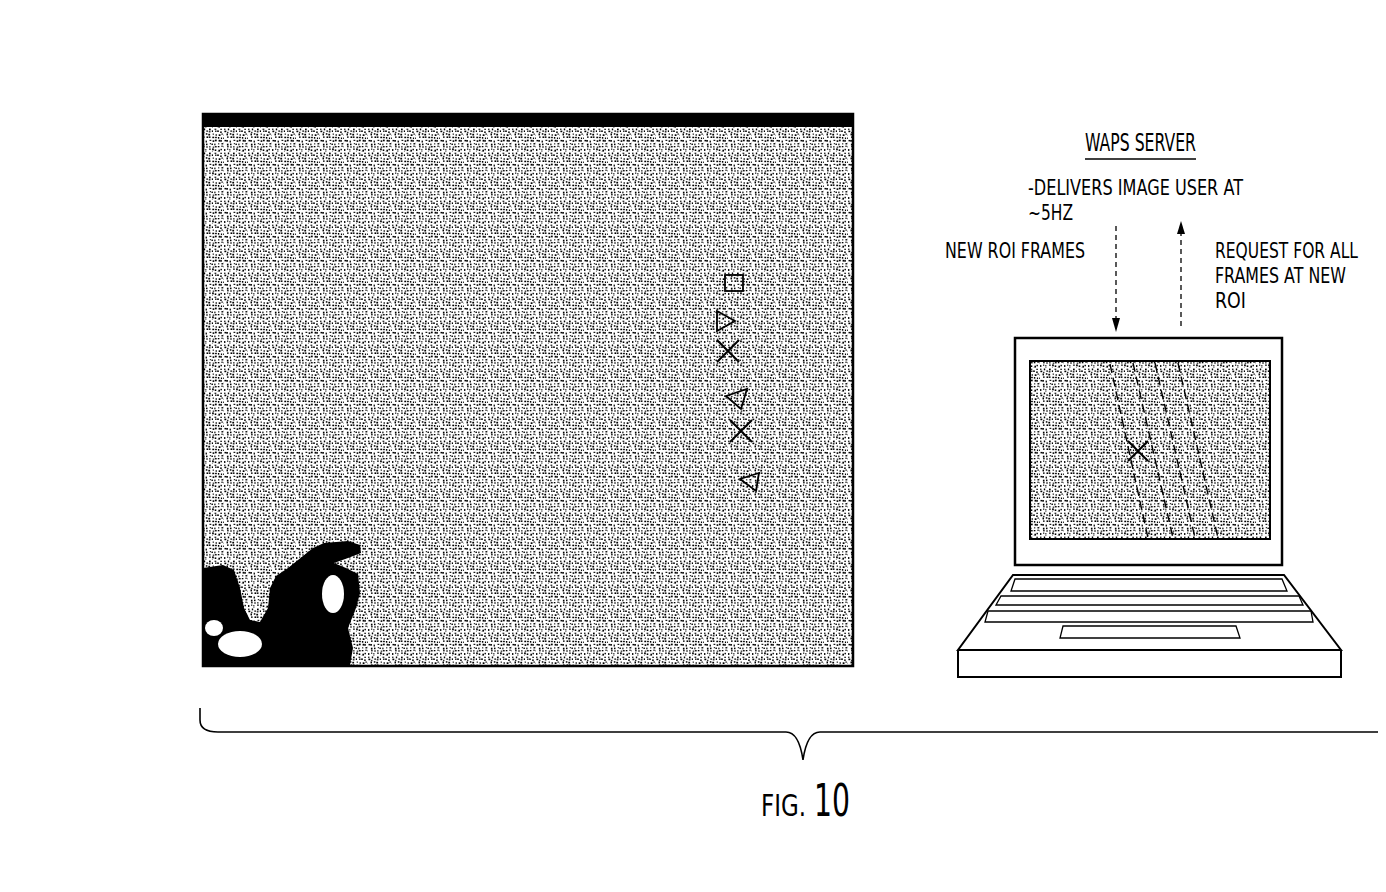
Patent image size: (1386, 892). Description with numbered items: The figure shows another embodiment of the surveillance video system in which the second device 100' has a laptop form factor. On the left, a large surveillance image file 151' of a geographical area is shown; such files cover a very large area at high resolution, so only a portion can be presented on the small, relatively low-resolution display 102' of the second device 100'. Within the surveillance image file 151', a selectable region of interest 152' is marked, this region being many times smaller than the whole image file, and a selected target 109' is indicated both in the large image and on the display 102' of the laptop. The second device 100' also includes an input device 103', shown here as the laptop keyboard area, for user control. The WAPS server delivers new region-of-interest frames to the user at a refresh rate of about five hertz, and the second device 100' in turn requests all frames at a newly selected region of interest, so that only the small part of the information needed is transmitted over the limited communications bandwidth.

The surveillance image file 151' is at (528, 354).
The selectable region of interest 152' is at (832, 232).
The selected target 109' is at (932, 385).
The second device 100' is at (1165, 499).
The display 102' is at (1193, 451).
The input device 103' is at (1164, 620).